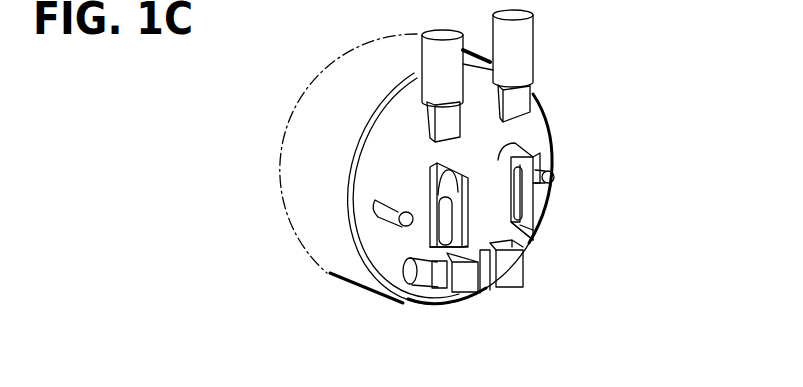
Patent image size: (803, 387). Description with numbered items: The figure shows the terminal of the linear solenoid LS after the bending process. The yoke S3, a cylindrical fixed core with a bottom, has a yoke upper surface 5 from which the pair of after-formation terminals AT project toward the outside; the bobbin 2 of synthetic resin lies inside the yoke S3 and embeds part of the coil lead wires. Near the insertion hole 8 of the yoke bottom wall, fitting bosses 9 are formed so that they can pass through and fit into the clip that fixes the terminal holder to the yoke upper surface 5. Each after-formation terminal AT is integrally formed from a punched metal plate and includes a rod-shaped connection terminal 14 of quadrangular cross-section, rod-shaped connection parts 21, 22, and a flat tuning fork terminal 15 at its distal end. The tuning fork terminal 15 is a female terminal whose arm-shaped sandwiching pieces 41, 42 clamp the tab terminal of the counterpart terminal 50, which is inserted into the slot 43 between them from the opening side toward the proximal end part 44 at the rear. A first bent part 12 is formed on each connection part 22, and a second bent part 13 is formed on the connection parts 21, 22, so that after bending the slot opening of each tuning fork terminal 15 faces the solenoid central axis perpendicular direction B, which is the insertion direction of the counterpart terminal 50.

The bobbin 2 is at (376, 287).
The yoke upper surface 5 is at (390, 127).
The insertion hole 8 is at (333, 273).
The fitting boss 9 is at (513, 147).
The bent part 12 is at (522, 242).
The bent part 13 is at (487, 268).
The connection terminal 14 is at (400, 300).
The tuning fork terminal 15 is at (203, 125).
The connection part 21 is at (457, 277).
The connection part 22 is at (417, 280).
The sandwiching piece 41 is at (437, 178).
The sandwiching piece 42 is at (440, 188).
The slot 43 is at (400, 222).
The proximal end part 44 is at (436, 250).
The counterpart terminal 50 is at (435, 62).
The after-formation terminal AT is at (423, 147).
The solenoid central axis perpendicular direction B is at (472, 110).
The linear solenoid LS is at (570, 108).
The yoke S3 is at (413, 43).